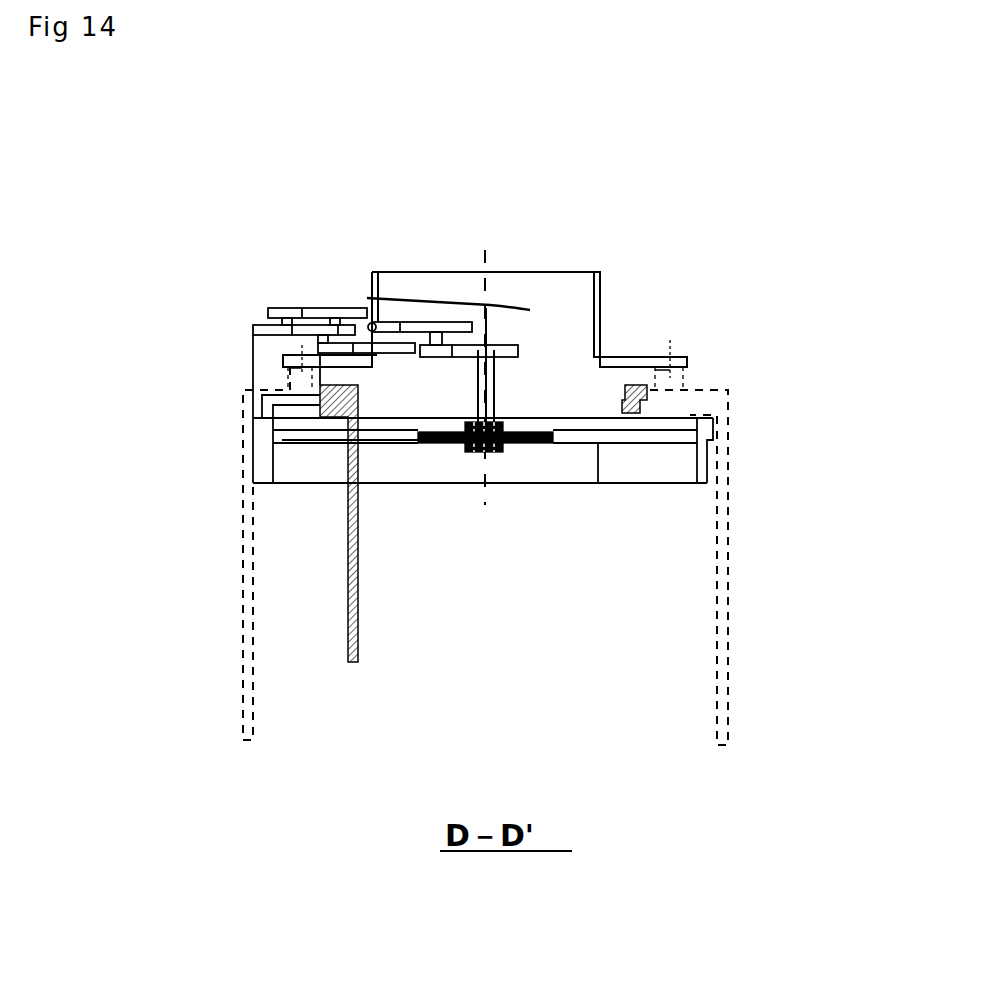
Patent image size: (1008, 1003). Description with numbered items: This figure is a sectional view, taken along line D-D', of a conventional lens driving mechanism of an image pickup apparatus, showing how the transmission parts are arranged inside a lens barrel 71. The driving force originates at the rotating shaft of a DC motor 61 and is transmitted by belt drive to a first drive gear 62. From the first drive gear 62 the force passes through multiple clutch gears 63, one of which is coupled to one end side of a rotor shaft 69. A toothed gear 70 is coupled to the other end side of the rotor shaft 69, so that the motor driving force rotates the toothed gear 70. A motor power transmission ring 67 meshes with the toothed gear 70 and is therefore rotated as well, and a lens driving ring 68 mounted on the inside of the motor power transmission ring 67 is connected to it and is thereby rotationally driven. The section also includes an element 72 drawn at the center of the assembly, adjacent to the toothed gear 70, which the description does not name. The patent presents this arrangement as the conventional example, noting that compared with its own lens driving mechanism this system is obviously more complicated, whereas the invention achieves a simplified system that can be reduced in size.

The DC motor 61 is at (248, 333).
The first drive gear 62 is at (332, 307).
The clutch gears 63 is at (442, 298).
The motor power transmission ring 67 is at (598, 483).
The lens driving ring 68 is at (350, 663).
The rotor shaft 69 is at (500, 390).
The toothed gear 70 is at (500, 452).
The lens barrel 71 is at (728, 660).
The drive shaft 72 is at (545, 452).